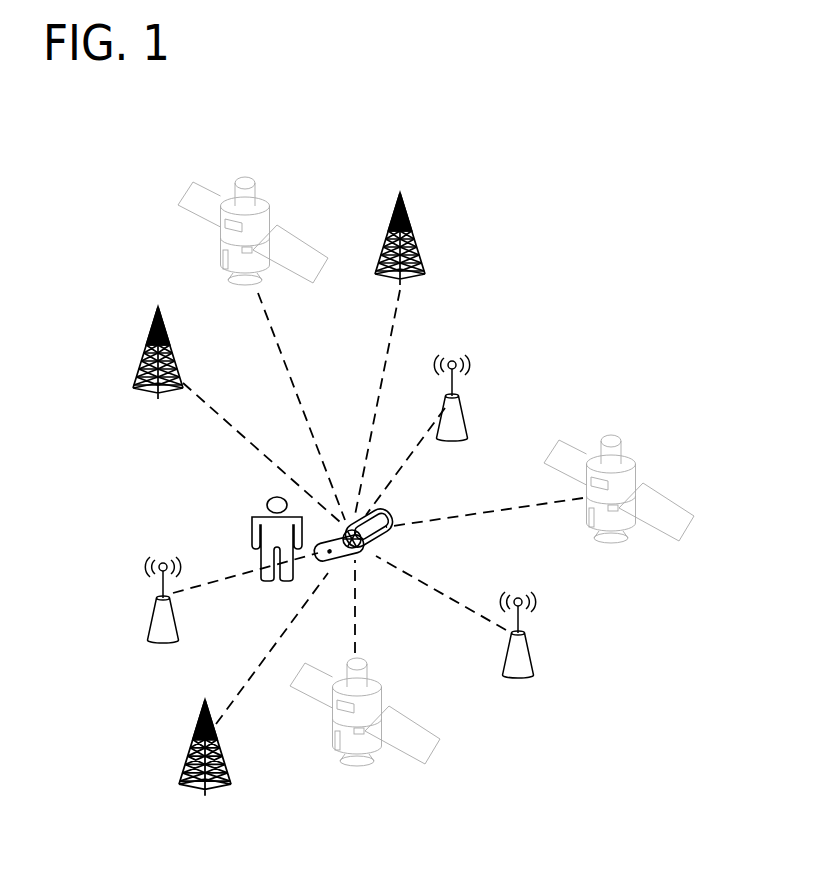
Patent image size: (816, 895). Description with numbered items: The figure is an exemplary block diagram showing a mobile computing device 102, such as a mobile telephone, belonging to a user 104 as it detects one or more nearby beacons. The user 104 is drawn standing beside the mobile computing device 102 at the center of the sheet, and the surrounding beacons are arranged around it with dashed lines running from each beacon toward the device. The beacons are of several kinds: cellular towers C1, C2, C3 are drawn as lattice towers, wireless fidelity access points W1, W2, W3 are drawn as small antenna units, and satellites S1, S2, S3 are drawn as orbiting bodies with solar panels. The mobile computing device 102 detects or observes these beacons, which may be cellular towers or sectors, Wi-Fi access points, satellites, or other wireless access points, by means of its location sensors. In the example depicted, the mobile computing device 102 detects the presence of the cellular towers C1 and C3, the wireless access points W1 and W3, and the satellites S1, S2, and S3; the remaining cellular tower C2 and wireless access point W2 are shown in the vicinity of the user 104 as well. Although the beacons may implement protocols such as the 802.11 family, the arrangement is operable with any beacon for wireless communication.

The mobile computing device 102 is at (362, 556).
The user 104 is at (250, 527).
The satellite S1 is at (253, 255).
The satellite S2 is at (619, 497).
The satellite S3 is at (365, 732).
The cellular tower C1 is at (391, 253).
The cellular tower C2 is at (205, 769).
The cellular tower C3 is at (158, 378).
The wireless fidelity access point W1 is at (453, 416).
The wireless fidelity access point W2 is at (519, 655).
The wireless fidelity access point W3 is at (164, 620).